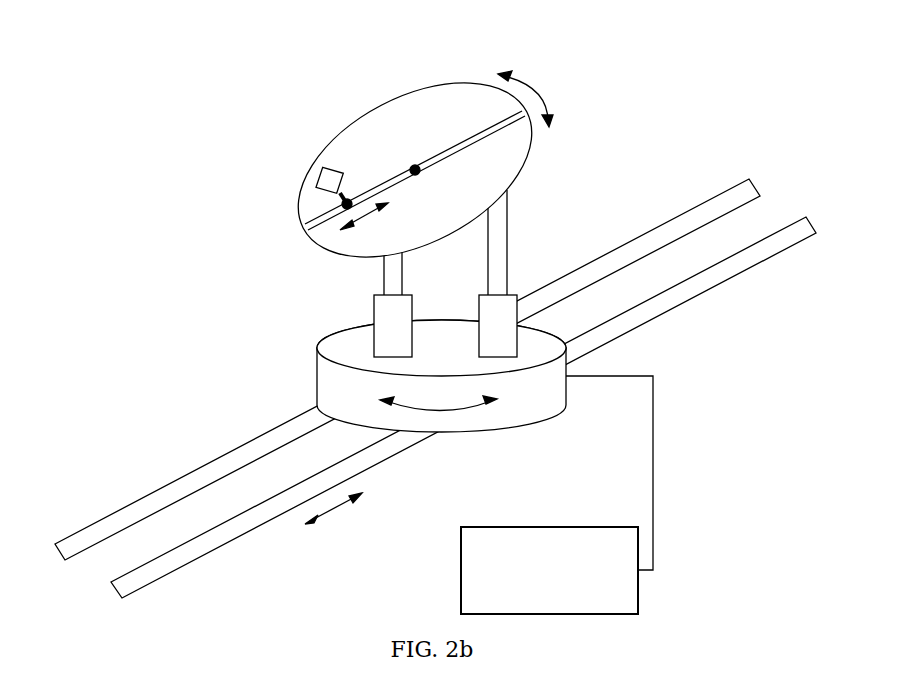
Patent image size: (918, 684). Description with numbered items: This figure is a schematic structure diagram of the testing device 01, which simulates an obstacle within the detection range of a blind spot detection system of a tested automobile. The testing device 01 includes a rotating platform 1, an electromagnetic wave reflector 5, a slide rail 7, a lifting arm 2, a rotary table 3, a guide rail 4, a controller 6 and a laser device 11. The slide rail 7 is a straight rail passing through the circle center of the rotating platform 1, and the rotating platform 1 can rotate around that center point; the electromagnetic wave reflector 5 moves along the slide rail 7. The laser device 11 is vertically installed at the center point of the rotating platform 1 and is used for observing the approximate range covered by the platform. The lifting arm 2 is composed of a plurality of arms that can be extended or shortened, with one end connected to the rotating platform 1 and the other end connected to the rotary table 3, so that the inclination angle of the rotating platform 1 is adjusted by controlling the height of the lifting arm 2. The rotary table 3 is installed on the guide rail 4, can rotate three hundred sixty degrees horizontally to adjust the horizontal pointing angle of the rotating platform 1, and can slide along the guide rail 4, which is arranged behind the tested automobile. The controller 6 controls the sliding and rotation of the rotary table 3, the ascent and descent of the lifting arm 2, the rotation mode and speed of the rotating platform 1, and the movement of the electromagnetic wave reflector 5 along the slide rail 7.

The rotating platform 1 is at (340, 128).
The lifting arm 2 is at (385, 315).
The rotary table 3 is at (337, 380).
The guide rail 4 is at (242, 525).
The electromagnetic wave reflector 5 is at (317, 180).
The controller 6 is at (557, 495).
The slide rail 7 is at (480, 142).
The laser device 11 is at (412, 167).
The testing device 01 is at (202, 243).